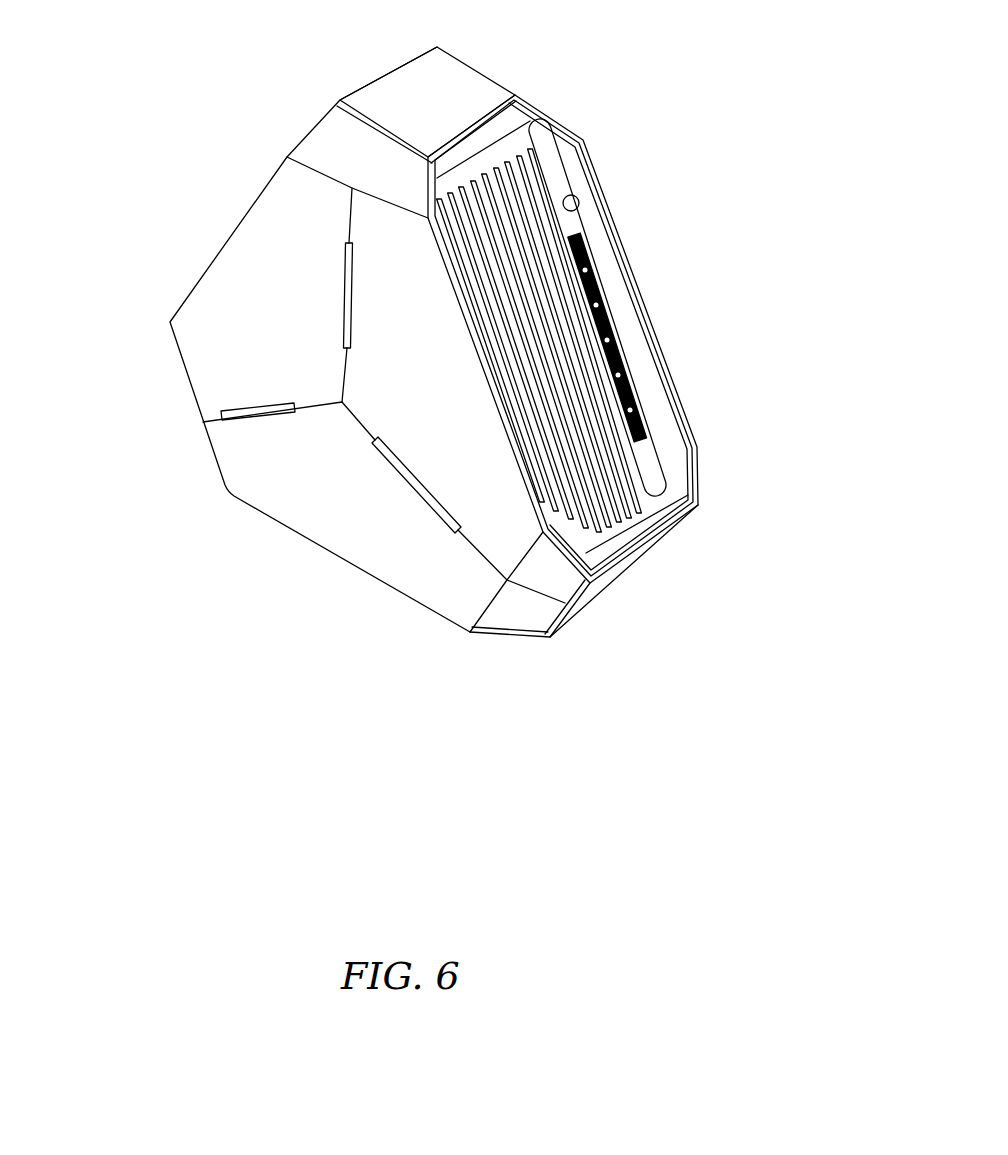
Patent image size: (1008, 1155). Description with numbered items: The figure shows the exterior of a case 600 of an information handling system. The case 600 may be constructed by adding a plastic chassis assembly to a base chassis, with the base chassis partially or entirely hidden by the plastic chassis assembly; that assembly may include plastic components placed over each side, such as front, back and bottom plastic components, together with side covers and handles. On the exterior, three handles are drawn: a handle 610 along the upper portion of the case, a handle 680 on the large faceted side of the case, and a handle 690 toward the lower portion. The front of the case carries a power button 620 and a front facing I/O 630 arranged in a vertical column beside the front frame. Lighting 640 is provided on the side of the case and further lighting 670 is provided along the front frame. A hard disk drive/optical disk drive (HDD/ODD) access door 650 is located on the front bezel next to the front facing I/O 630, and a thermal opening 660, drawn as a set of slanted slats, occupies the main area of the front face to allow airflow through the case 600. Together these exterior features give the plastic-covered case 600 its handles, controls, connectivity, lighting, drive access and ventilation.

The case 600 is at (755, 75).
The handle 610 is at (487, 97).
The power button 620 is at (580, 200).
The front facing I/O 630 is at (573, 262).
The lighting 640 is at (345, 258).
The hard disk drive/optical disk drive (HDD/ODD) access door 650 is at (613, 305).
The thermal opening 660 is at (588, 387).
The lighting 670 is at (677, 416).
The handle 680 is at (163, 385).
The handle 690 is at (627, 582).